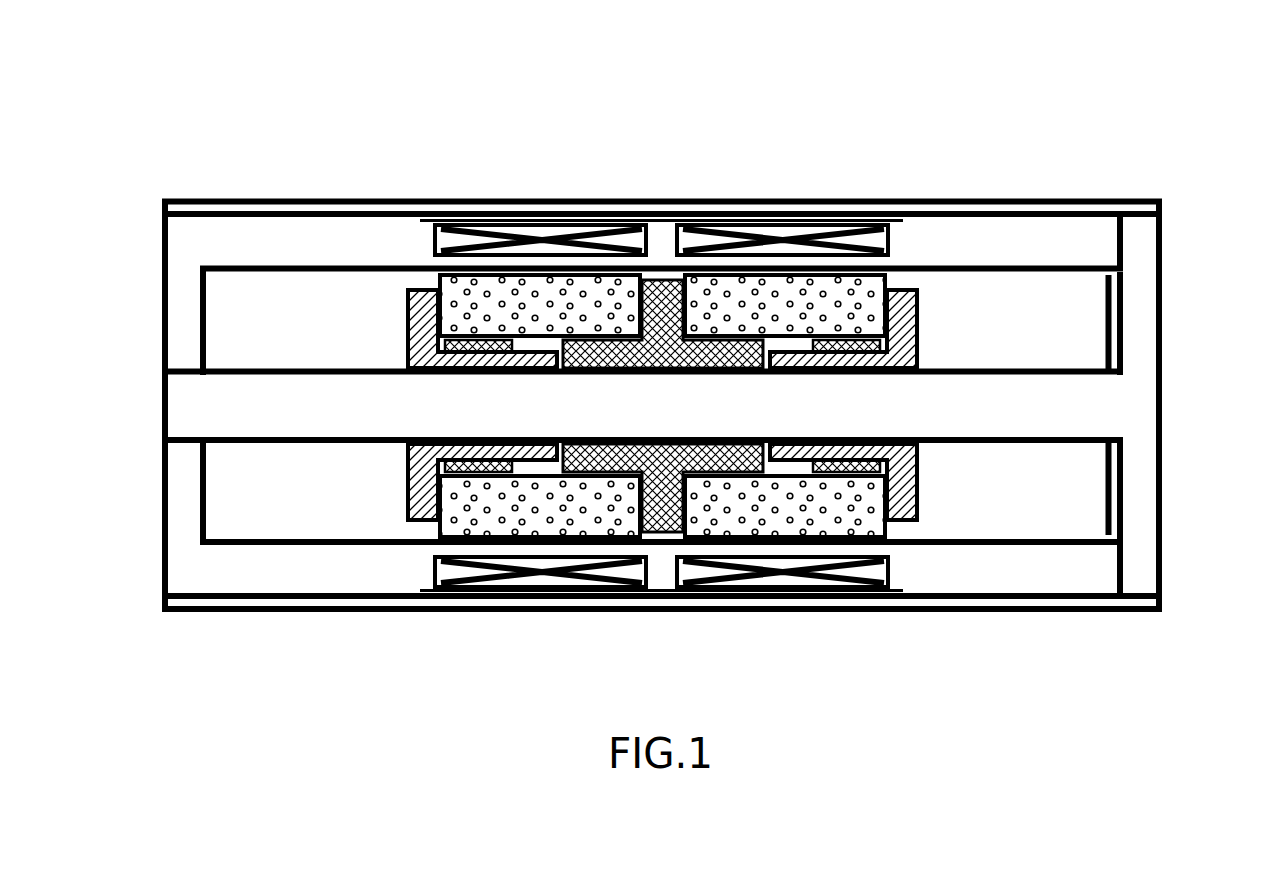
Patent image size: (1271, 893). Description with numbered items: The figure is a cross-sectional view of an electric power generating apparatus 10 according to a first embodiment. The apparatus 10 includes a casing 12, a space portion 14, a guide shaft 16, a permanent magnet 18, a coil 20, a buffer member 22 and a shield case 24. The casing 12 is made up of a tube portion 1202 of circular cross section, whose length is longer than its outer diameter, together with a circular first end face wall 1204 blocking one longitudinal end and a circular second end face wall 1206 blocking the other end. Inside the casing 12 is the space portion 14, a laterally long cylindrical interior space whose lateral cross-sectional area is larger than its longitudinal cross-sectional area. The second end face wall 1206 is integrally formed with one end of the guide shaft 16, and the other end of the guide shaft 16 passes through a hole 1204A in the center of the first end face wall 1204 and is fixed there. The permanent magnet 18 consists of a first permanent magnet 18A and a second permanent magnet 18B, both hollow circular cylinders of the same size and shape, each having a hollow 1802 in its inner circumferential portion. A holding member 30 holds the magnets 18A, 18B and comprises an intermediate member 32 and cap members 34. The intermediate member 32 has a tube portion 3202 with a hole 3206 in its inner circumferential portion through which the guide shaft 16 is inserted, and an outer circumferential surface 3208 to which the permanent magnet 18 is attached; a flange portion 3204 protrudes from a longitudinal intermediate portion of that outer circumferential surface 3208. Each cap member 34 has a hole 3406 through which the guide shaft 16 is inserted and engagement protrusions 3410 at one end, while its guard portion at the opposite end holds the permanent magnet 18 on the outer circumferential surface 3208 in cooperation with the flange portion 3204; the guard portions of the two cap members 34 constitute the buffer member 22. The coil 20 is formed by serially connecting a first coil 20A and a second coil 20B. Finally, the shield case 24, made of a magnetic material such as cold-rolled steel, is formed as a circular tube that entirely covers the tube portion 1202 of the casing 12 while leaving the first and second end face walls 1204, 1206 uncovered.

The electric power generating apparatus 10 is at (703, 102).
The shield case 24 is at (281, 198).
The casing 12 is at (662, 363).
The tube portion 1202 is at (375, 233).
The first end face wall 1204 is at (180, 298).
The hole 1204A is at (187, 432).
The second end face wall 1206 is at (1140, 297).
The space portion 14 is at (1027, 523).
The guide shaft 16 is at (243, 443).
The permanent magnet 18 is at (709, 329).
The first permanent magnet 18A is at (437, 283).
The second permanent magnet 18B is at (887, 283).
The hollow 1802 is at (587, 418).
The coil 20 is at (665, 343).
The first coil 20A is at (622, 245).
The second coil 20B is at (895, 244).
The buffer member 22 is at (407, 323).
The cap member 34 is at (642, 428).
The hole 3406 is at (953, 445).
The engagement protrusions 3410 is at (500, 463).
The holding member 30 is at (391, 511).
The intermediate member 32 is at (661, 458).
The flange portion 3204 is at (600, 592).
The hole 3206 is at (658, 548).
The tube portion 3202 is at (715, 517).
The outer circumferential surface 3208 is at (752, 546).